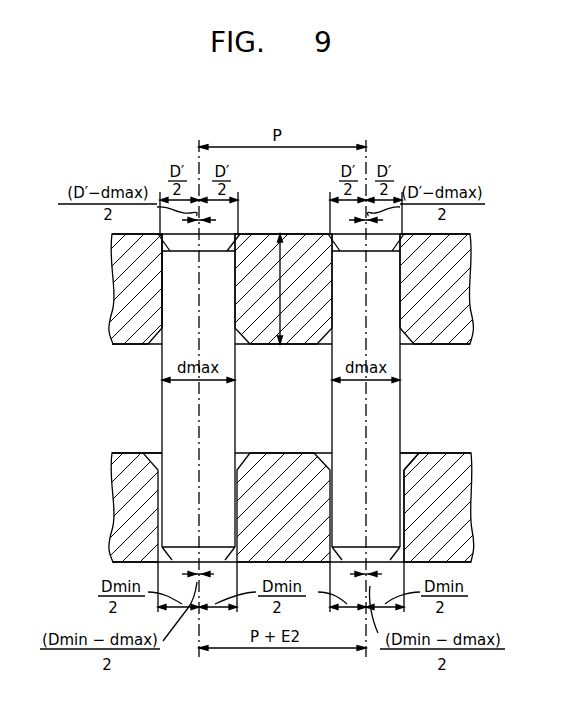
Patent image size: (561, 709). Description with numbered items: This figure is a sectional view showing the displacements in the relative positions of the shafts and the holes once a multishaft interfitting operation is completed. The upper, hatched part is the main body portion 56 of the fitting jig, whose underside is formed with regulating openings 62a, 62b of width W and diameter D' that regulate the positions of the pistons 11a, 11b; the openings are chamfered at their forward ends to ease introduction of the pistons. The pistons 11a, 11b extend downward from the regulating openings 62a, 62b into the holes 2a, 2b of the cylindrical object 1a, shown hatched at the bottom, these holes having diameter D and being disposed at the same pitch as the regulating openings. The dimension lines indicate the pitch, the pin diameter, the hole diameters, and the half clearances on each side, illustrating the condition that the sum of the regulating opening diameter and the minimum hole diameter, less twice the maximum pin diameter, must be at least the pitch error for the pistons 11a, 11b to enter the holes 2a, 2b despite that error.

The regulating opening 62a is at (162, 276).
The regulating opening 62b is at (400, 276).
The main body portion 56 is at (464, 320).
The piston 11a is at (170, 405).
The piston 11b is at (392, 405).
The cylindrical object 1a is at (451, 458).
The hole 2a is at (238, 491).
The hole 2b is at (404, 491).